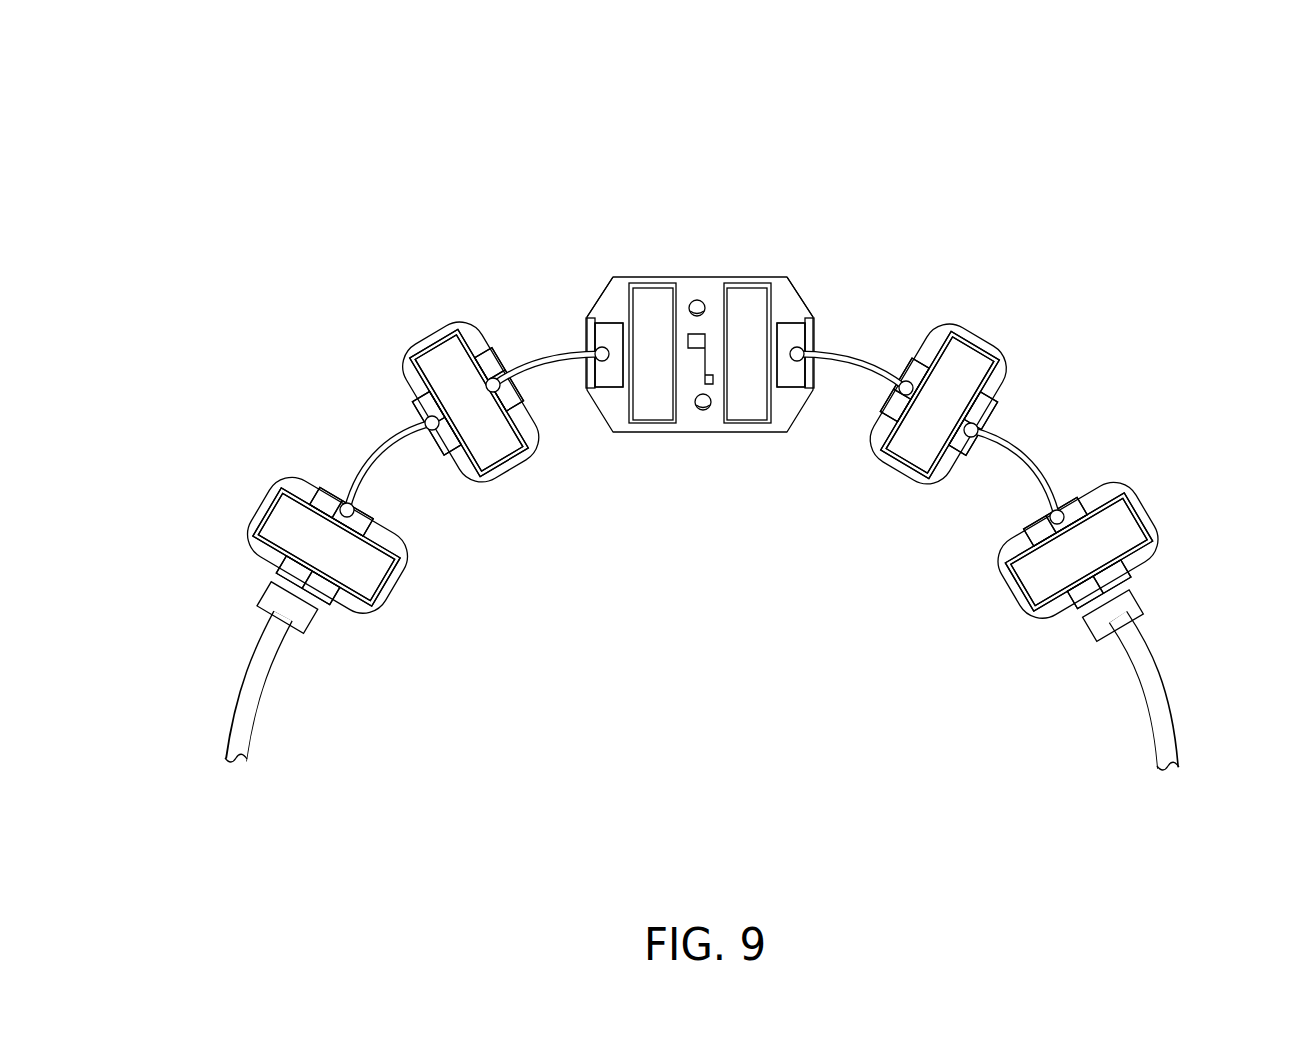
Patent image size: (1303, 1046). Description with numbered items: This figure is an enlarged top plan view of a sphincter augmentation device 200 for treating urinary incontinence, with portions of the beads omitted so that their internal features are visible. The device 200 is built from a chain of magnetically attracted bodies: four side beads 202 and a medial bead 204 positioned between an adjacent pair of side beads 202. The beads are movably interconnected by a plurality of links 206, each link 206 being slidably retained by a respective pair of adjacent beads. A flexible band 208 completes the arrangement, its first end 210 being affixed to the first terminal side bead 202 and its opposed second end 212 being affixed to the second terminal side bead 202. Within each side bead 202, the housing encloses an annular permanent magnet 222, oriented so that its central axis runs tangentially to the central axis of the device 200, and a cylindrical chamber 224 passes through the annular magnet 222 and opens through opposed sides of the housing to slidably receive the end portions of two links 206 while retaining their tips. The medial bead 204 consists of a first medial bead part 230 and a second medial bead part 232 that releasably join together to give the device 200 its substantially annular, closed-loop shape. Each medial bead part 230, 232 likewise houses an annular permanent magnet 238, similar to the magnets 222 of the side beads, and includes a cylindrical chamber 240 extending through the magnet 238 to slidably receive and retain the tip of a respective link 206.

The sphincter augmentation device 200 is at (335, 118).
The side bead 202 is at (398, 367).
The medial bead 204 is at (709, 275).
The link 206 is at (527, 357).
The flexible band 208 is at (223, 728).
The first end 210 is at (272, 607).
The second end 212 is at (1137, 620).
The annular permanent magnet 222 is at (488, 458).
The cylindrical chamber 224 is at (443, 450).
The first medial bead part 230 is at (627, 277).
The second medial bead part 232 is at (765, 277).
The annular permanent magnet 238 is at (753, 403).
The cylindrical chamber 240 is at (612, 380).